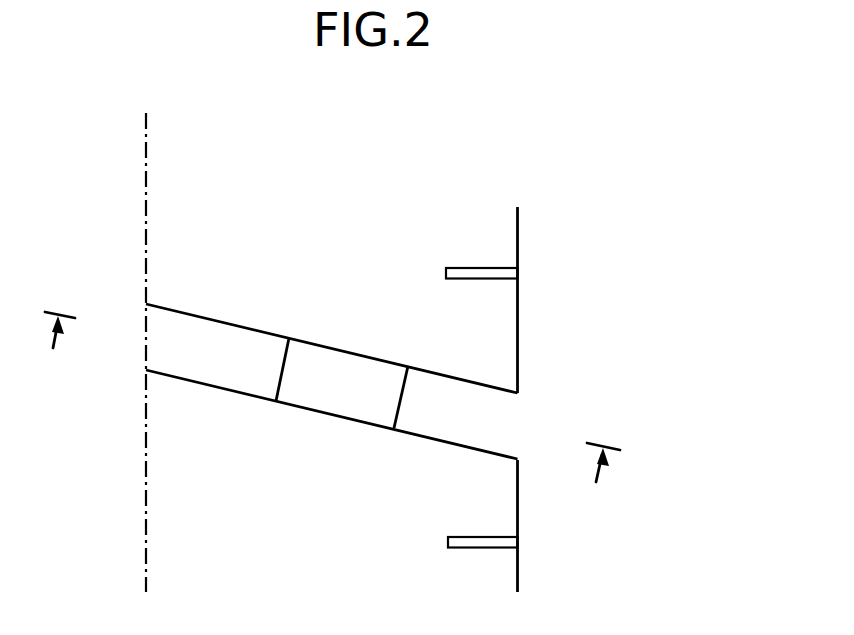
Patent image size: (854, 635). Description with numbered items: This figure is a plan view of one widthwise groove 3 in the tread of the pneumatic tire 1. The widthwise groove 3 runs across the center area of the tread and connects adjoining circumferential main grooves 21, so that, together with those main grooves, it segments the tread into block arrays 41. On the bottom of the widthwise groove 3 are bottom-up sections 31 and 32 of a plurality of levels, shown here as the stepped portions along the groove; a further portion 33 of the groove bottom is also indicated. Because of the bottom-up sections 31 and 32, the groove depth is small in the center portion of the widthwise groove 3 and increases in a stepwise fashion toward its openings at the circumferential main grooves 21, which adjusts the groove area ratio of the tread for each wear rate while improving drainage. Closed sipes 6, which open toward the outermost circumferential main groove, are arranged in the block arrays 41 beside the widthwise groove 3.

The pneumatic tire 1 is at (565, 184).
The widthwise groove 3 is at (332, 381).
The bottom-up section 31 is at (210, 372).
The bottom-up section 32 is at (337, 402).
The third portion 33 is at (450, 430).
The block array 41 is at (315, 210).
The closed sipe 6 is at (465, 267).
The circumferential main groove 21 is at (548, 350).